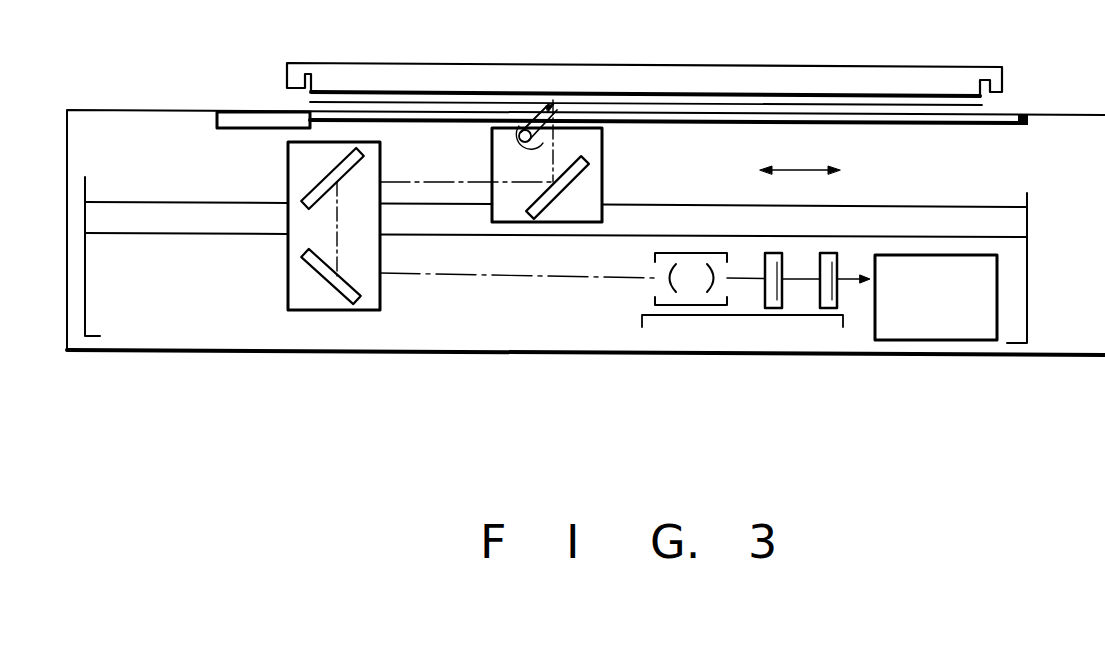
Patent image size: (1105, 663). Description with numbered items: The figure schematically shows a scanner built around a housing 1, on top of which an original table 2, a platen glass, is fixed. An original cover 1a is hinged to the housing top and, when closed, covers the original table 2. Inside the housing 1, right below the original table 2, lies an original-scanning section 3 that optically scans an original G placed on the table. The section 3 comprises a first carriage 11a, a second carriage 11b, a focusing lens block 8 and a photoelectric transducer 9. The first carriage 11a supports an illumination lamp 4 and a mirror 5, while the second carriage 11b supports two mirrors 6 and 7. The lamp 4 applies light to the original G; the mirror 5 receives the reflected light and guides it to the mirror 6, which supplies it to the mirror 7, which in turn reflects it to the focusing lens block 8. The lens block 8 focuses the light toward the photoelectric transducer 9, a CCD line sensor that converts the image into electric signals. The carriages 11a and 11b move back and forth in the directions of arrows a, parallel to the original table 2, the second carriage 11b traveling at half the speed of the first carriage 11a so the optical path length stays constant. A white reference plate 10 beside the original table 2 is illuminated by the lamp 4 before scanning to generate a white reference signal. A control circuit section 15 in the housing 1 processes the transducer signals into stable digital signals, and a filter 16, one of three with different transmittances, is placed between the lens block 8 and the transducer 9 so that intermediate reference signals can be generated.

The housing 1 is at (1080, 342).
The original cover 1a is at (738, 65).
The original G is at (945, 104).
The original table 2 is at (1019, 117).
The original-scanning section 3 is at (479, 280).
The illumination lamp 4 is at (530, 126).
The mirror 5 is at (563, 199).
The mirror 6 is at (330, 161).
The mirror 7 is at (325, 286).
The focusing lens block 8 is at (657, 284).
The photoelectric transducer 9 is at (830, 290).
The white reference plate 10 is at (220, 114).
The first carriage 11a is at (603, 153).
The second carriage 11b is at (328, 312).
The control circuit section 15 is at (930, 342).
The filter 16 is at (773, 309).
The arrows a is at (800, 159).